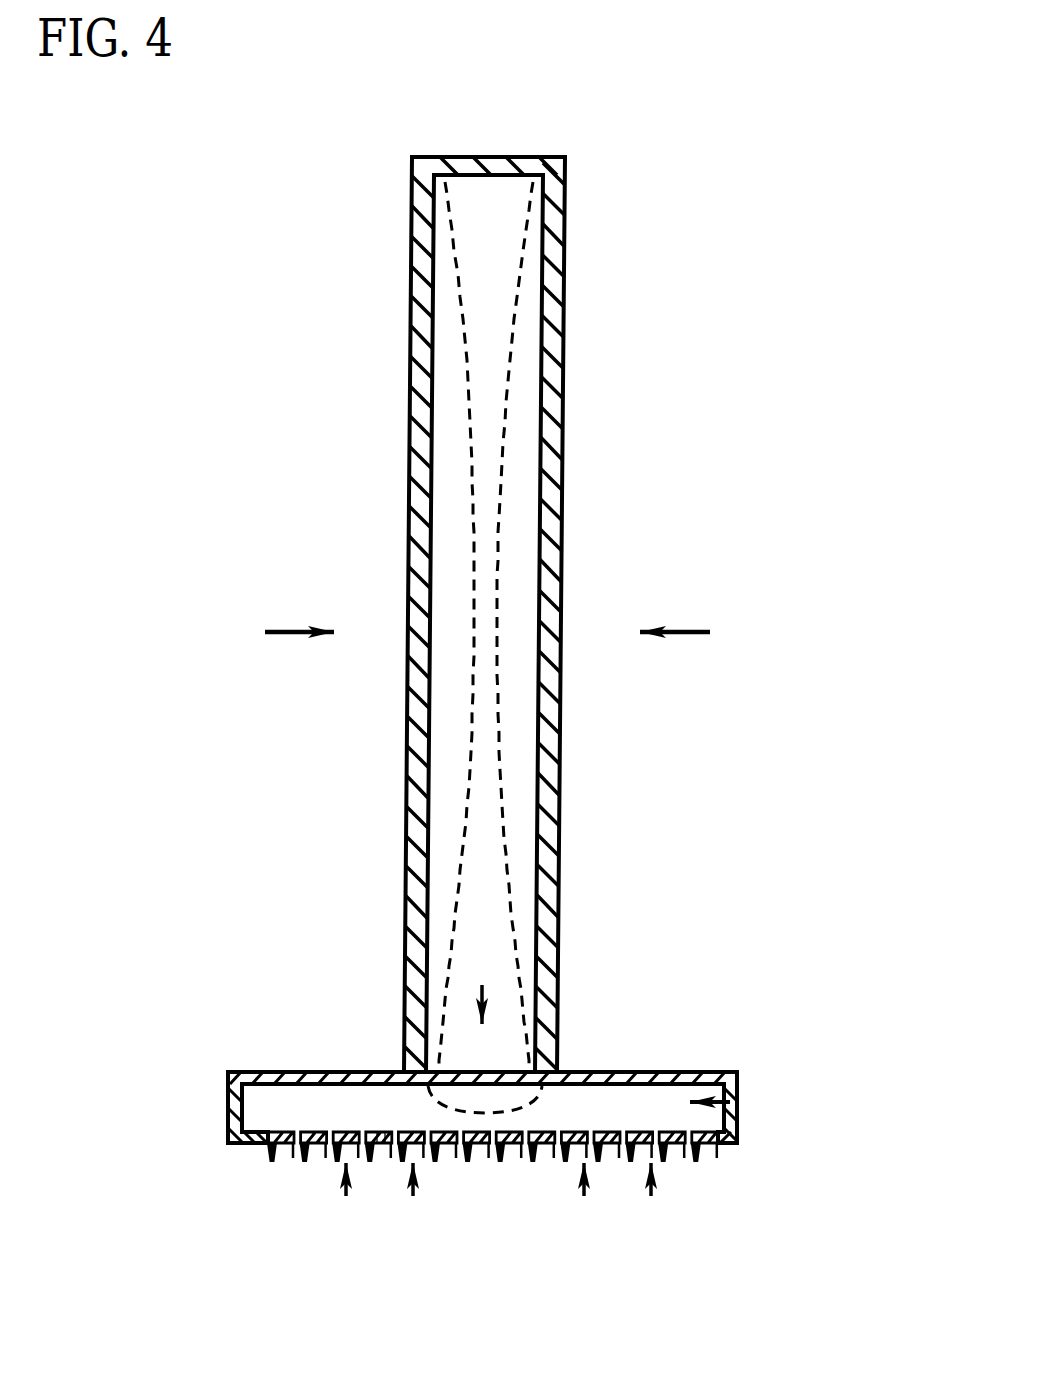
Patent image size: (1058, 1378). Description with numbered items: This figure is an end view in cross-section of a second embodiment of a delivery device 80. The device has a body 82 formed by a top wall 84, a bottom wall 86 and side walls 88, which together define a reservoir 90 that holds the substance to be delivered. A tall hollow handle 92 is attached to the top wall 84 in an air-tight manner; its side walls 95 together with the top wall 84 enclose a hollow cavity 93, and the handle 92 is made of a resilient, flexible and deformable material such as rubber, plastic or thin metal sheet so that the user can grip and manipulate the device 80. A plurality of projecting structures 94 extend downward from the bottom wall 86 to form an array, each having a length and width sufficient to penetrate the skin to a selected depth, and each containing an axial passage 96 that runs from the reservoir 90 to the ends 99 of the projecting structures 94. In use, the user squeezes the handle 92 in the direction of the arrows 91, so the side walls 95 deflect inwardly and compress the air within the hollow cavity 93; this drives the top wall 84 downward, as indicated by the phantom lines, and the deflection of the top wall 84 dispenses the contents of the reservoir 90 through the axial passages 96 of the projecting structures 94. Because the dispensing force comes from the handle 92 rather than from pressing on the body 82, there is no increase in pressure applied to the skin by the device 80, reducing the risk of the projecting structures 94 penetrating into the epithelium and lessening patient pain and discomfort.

The delivery device 80 is at (640, 181).
The body 82 is at (755, 1067).
The top wall 84 is at (630, 1072).
The bottom wall 86 is at (717, 1152).
The side walls 88 is at (228, 1105).
The reservoir 90 is at (737, 1101).
The arrows 91 is at (297, 632).
The handle 92 is at (572, 834).
The hollow cavity 93 is at (493, 267).
The projecting structures 94 is at (347, 1193).
The side walls 95 is at (412, 410).
The axial passage 96 is at (381, 1143).
The ends 99 is at (340, 1148).